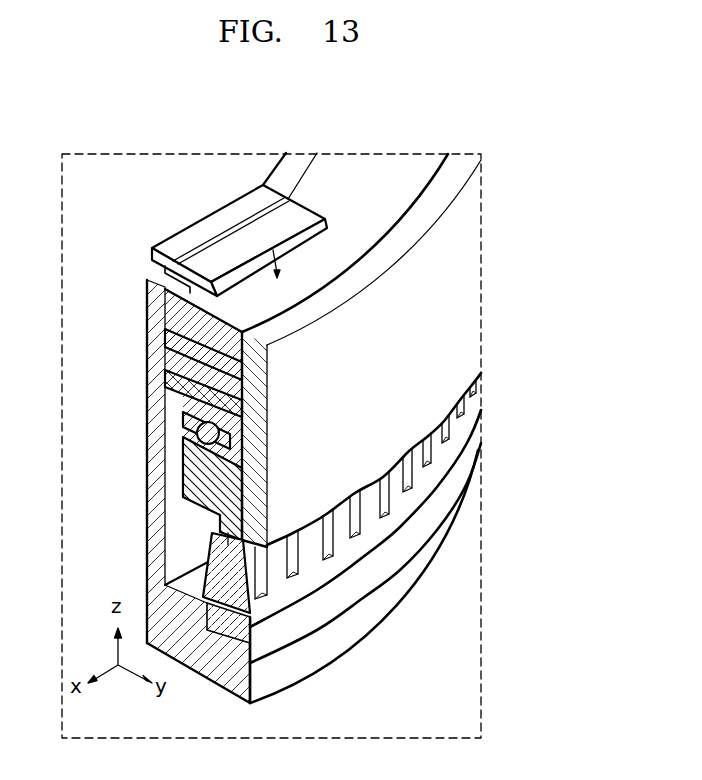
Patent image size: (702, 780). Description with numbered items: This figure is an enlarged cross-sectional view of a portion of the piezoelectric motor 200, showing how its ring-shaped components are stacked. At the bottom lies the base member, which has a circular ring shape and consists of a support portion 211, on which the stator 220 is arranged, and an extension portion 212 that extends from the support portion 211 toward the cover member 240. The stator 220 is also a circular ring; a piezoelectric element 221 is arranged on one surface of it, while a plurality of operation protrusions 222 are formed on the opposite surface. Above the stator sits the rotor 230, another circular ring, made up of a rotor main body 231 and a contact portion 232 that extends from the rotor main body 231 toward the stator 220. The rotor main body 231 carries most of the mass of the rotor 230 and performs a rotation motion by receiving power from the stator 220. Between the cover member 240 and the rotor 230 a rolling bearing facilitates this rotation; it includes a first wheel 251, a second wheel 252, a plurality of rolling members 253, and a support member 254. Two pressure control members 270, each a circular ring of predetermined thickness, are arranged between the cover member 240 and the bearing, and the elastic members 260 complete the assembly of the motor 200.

The piezoelectric motor 200 is at (505, 245).
The support portion 211 is at (219, 683).
The extension portion 212 is at (153, 537).
The stator 220 is at (412, 688).
The piezoelectric element 221 is at (278, 633).
The operation protrusions 222 is at (280, 573).
The rotor 230 is at (555, 482).
The rotor main body 231 is at (257, 433).
The contact portion 232 is at (250, 565).
The cover member 240 is at (177, 318).
The first wheel 251 is at (193, 457).
The second wheel 252 is at (170, 390).
The rolling members 253 is at (197, 433).
The support member 254 is at (188, 415).
The elastic members 260 is at (217, 224).
The pressure control members 270 is at (177, 347).